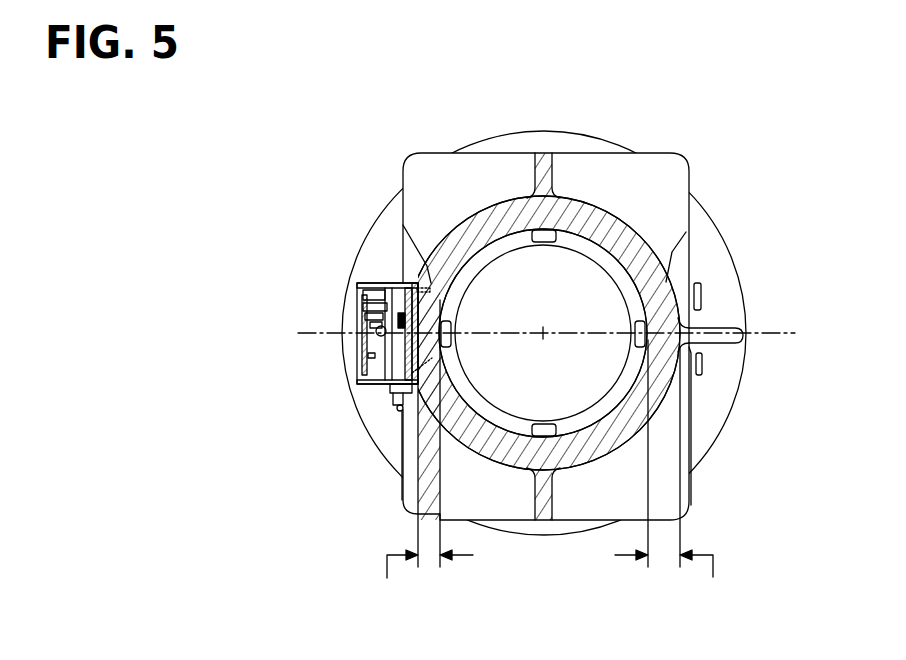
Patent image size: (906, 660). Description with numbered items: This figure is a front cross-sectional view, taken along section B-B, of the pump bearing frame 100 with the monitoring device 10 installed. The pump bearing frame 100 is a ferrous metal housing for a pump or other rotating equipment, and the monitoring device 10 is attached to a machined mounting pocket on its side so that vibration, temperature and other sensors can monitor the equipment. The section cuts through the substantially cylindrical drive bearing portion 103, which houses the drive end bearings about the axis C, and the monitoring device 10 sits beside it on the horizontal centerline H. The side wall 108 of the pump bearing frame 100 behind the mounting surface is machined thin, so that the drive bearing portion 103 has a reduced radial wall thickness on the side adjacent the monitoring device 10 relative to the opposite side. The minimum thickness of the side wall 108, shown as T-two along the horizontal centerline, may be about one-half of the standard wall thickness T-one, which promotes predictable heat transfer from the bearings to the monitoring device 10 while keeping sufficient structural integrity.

The pump bearing frame 100 is at (158, 192).
The side wall 108 is at (440, 252).
The drive bearing portion 103 is at (632, 283).
The monitoring device 10 is at (360, 281).